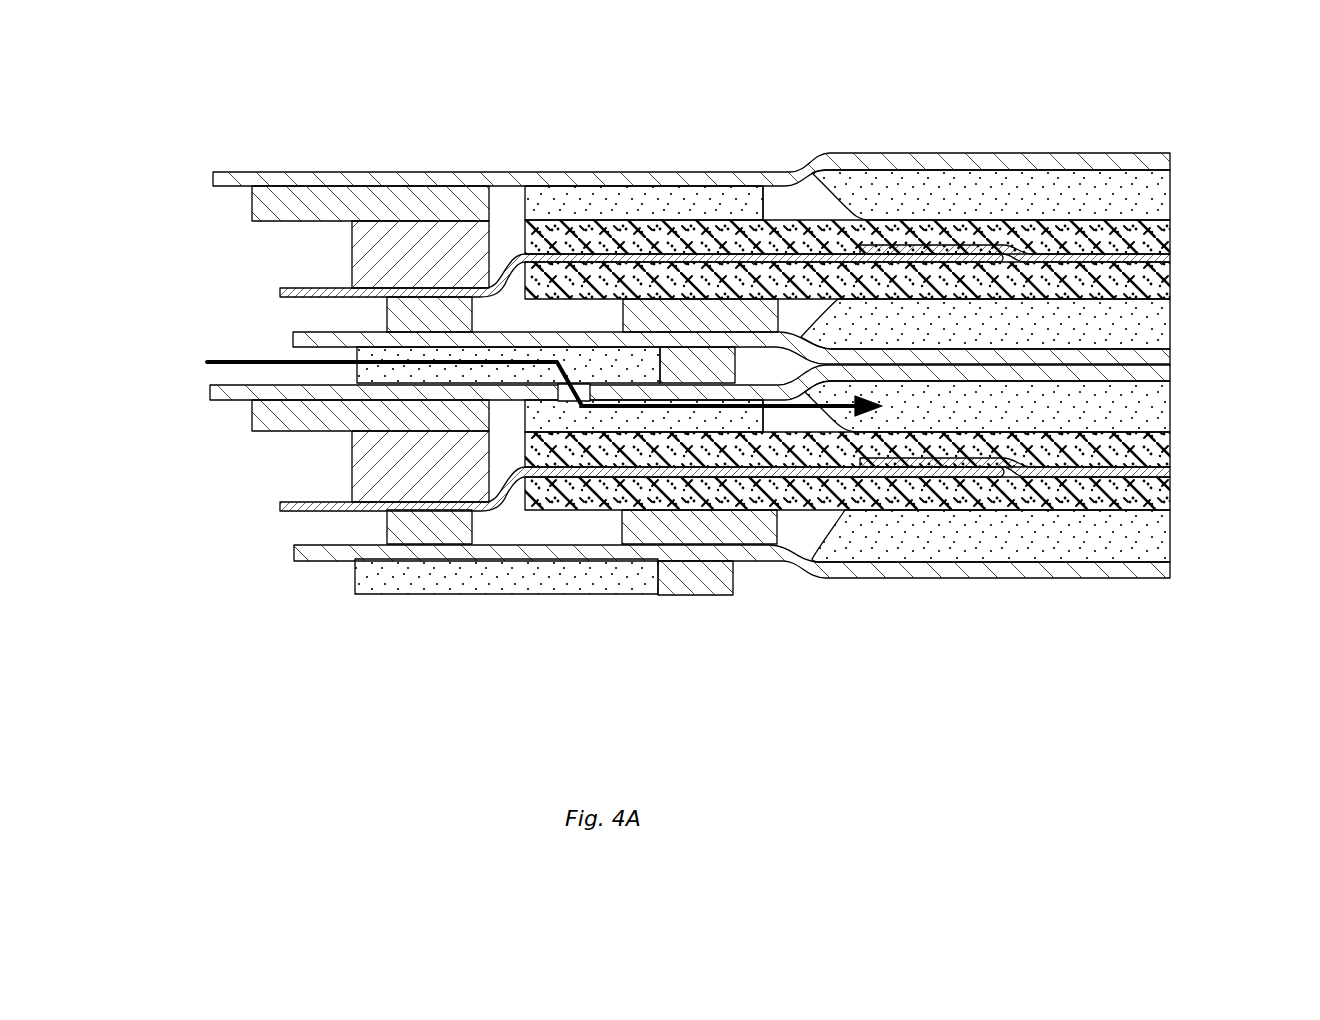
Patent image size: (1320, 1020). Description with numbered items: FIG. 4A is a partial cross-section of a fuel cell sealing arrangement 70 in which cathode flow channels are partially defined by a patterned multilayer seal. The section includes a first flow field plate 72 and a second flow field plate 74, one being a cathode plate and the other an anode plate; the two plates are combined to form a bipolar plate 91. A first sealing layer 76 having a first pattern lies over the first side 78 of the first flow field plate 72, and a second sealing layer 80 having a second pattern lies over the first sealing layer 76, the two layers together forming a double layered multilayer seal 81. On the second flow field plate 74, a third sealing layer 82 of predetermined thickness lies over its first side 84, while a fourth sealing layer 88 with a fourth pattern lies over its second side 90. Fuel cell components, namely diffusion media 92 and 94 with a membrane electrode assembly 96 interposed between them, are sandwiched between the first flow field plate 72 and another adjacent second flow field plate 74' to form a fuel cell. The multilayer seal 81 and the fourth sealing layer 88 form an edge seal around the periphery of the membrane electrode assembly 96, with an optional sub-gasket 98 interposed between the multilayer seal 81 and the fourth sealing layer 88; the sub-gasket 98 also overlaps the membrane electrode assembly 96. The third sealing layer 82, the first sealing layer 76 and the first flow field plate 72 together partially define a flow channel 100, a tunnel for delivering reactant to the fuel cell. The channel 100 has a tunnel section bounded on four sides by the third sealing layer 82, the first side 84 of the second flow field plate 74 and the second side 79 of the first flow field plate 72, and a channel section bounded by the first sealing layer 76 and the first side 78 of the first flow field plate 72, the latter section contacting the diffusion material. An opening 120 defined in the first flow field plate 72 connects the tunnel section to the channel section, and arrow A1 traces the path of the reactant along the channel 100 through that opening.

The thermal assembly 70 is at (160, 98).
The first flow field plate 72 is at (213, 178).
The second flow field plate 74 is at (643, 423).
The adjacent second flow field plate 74' is at (646, 539).
The first sealing layer 76 is at (507, 309).
The first side of first flow field plate 78 is at (432, 186).
The second side of first flow field plate 79 is at (212, 385).
The second sealing layer 80 is at (420, 361).
The multilayer seal 81 is at (236, 439).
The third sealing layer 82 is at (545, 471).
The first side of second flow field plate 84 is at (546, 347).
The fourth sealing layer 88 is at (582, 420).
The second side of second flow field plate 90 is at (293, 338).
The bipolar plate 91 is at (1178, 350).
The diffusion media 92 is at (1170, 240).
The diffusion media 94 is at (1170, 282).
The membrane electrode assembly 96 is at (1170, 258).
The sub-gasket 98 is at (332, 288).
The flow channel 100 is at (330, 356).
The opening 120 is at (558, 392).
The arrow A1 is at (207, 362).